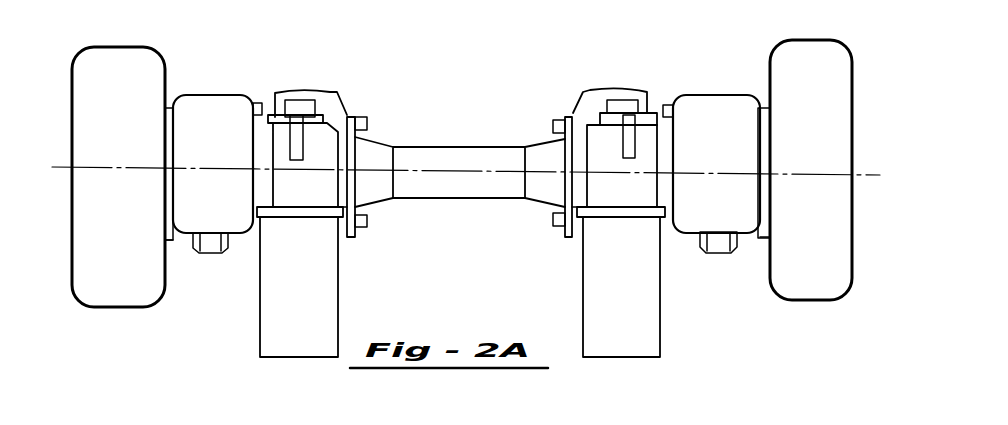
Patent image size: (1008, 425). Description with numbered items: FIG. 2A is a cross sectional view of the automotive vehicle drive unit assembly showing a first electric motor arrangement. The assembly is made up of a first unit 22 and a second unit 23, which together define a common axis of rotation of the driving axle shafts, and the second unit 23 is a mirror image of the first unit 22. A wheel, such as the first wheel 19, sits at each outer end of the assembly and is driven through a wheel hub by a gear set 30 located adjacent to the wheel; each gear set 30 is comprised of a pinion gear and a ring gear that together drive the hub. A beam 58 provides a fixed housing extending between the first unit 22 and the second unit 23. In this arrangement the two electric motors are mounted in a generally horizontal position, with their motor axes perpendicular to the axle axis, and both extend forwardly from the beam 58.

The first wheel 19 is at (112, 283).
The first unit 22 is at (215, 283).
The second unit 23 is at (717, 82).
The gear set 30 is at (597, 157).
The beam 58 is at (452, 185).